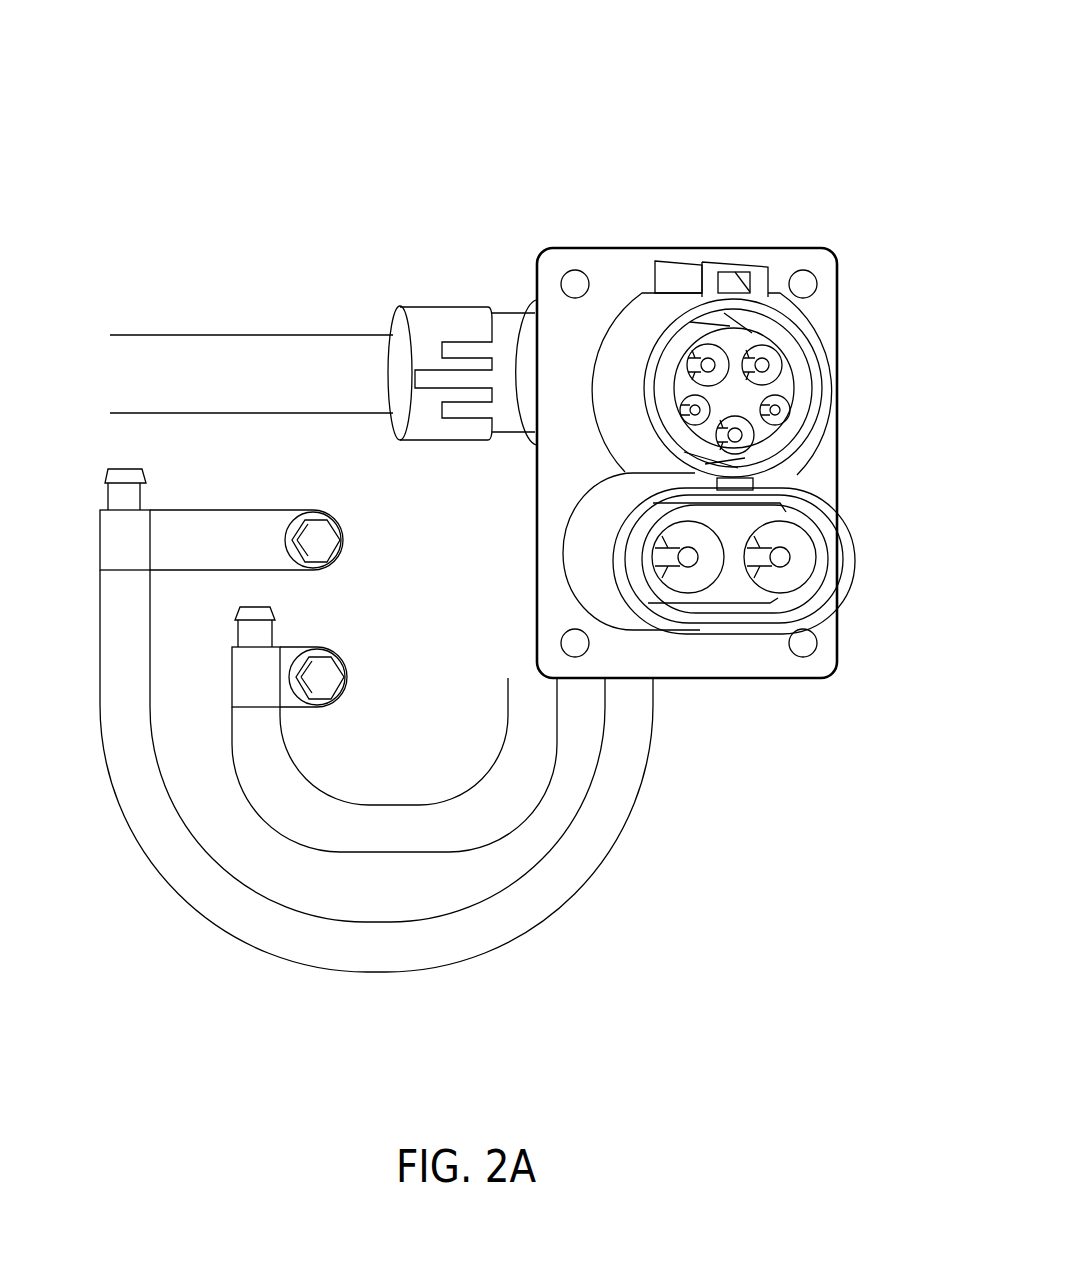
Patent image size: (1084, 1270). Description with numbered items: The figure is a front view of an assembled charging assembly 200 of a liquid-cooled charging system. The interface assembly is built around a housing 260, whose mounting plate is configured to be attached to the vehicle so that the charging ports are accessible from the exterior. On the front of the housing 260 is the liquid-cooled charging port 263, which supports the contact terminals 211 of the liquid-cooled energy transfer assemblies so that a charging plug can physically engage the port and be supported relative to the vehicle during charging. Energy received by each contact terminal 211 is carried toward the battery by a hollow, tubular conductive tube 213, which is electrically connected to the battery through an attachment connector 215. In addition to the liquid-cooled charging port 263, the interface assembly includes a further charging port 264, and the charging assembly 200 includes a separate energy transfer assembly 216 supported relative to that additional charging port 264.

The charging assembly 200 is at (474, 66).
The energy transfer assembly 216 is at (312, 278).
The housing 260 is at (739, 237).
The charging port 264 is at (856, 386).
The liquid-cooled charging port 263 is at (870, 594).
The contact terminal 211 is at (790, 556).
The attachment connector 215 is at (123, 467).
The conductive tube 213 is at (515, 742).